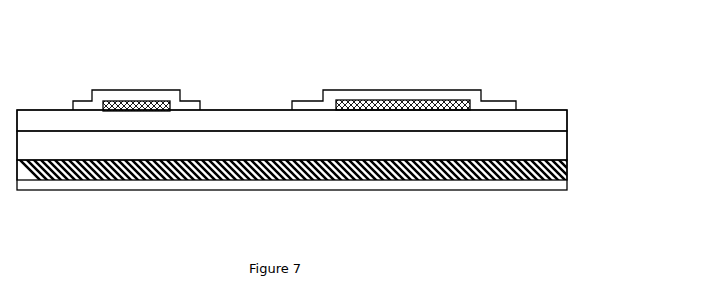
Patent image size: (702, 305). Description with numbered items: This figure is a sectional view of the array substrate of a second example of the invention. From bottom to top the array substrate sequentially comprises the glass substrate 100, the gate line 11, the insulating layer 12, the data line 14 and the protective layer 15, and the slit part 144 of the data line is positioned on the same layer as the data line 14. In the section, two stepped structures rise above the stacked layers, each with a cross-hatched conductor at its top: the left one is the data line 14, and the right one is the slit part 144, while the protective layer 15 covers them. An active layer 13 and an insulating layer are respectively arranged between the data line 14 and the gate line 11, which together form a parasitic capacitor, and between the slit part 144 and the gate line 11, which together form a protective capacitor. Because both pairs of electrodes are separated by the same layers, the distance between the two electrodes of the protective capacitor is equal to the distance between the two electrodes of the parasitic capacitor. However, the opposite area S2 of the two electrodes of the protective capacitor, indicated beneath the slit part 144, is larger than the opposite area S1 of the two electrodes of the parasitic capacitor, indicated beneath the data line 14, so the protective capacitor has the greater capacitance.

The glass substrate 100 is at (292, 179).
The gate line 11 is at (310, 194).
The insulating layer 12 is at (292, 189).
The active layer 13 is at (292, 81).
The data line 14 is at (136, 71).
The protective layer 15 is at (404, 67).
The slit line of data line 144 is at (431, 81).
The opposite area of the two electrodes of the parasitic capacitor S1 is at (103, 112).
The opposite area of the two electrodes of the protective capacitor S2 is at (338, 112).